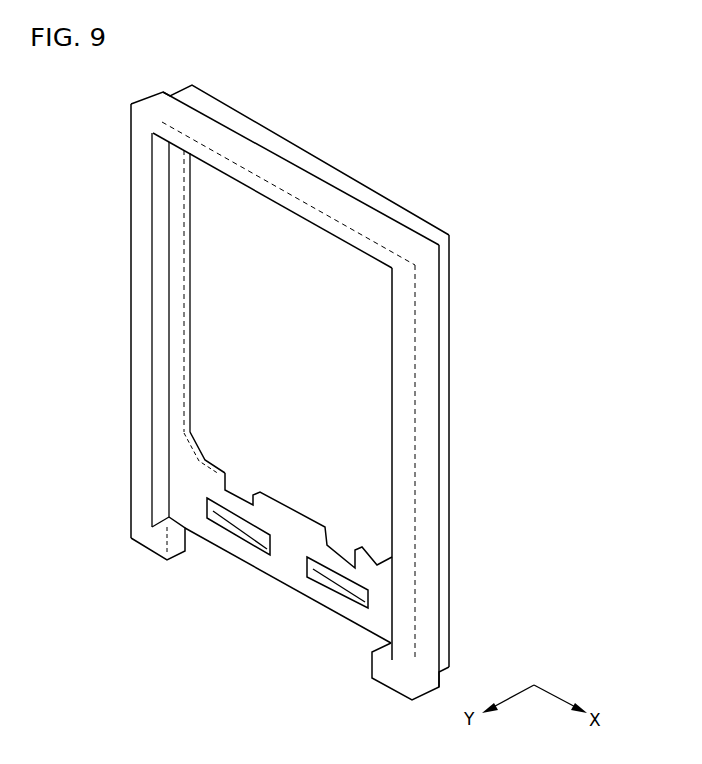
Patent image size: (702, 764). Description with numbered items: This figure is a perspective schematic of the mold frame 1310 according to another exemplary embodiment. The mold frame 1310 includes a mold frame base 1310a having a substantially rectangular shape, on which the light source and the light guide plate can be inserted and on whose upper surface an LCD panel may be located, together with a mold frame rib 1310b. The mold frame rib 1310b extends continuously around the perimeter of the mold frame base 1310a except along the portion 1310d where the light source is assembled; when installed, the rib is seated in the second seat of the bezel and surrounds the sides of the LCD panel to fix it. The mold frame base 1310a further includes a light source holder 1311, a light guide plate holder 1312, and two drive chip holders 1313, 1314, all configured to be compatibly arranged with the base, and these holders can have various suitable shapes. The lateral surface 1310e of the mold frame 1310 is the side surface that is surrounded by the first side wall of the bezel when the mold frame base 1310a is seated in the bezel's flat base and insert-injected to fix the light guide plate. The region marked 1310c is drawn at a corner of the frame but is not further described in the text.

The mold frame 1310 is at (545, 174).
The mold frame base 1310a is at (404, 335).
The mold frame rib 1310b is at (428, 406).
The chamfered corner portion of frame 1310c is at (174, 470).
The portion where the light source is assembled 1310d is at (334, 616).
The lateral surface of the mold frame 1310e is at (445, 533).
The light source holder 1311 is at (220, 490).
The light guide plate holder 1312 is at (186, 327).
The drive chip holder 1313 is at (224, 546).
The drive chip holder 1314 is at (302, 597).